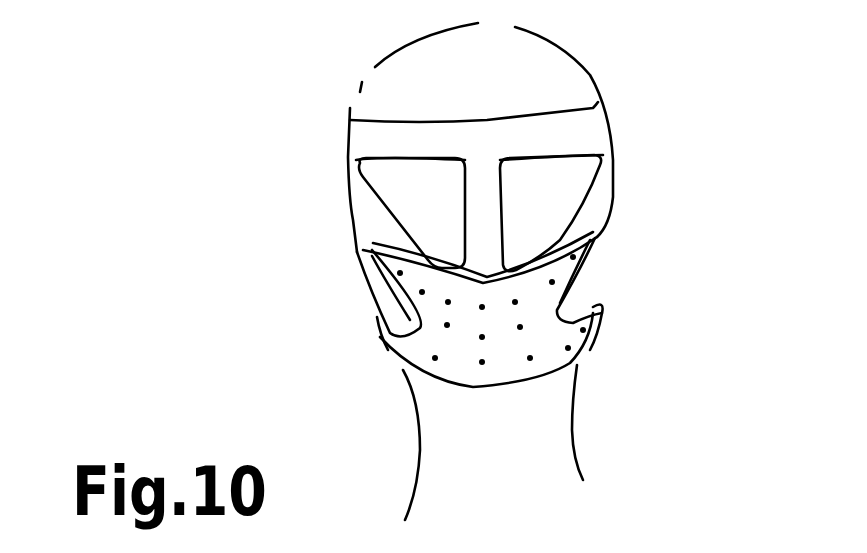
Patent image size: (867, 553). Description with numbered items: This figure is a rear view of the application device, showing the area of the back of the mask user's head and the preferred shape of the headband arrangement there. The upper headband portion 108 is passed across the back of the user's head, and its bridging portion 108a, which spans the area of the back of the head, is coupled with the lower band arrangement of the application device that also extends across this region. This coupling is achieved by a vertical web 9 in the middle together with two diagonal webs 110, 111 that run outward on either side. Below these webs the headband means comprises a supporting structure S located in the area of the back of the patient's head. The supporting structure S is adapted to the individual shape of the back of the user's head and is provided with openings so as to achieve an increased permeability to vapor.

The vertical web 9 is at (477, 210).
The head shell / mask body 108 is at (600, 127).
The front band of mask 108a is at (487, 140).
The diagonal web 110 is at (593, 203).
The diagonal web 111 is at (370, 207).
The supporting structure S is at (505, 358).